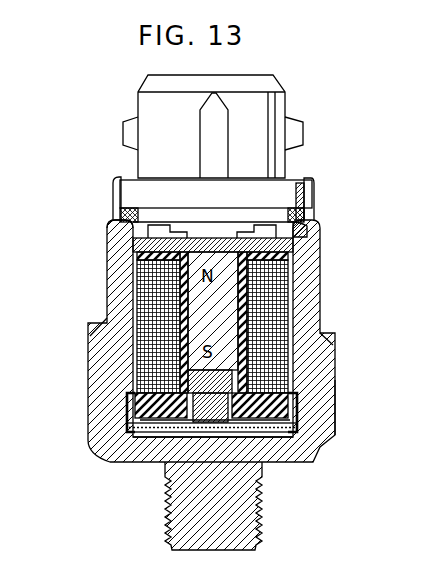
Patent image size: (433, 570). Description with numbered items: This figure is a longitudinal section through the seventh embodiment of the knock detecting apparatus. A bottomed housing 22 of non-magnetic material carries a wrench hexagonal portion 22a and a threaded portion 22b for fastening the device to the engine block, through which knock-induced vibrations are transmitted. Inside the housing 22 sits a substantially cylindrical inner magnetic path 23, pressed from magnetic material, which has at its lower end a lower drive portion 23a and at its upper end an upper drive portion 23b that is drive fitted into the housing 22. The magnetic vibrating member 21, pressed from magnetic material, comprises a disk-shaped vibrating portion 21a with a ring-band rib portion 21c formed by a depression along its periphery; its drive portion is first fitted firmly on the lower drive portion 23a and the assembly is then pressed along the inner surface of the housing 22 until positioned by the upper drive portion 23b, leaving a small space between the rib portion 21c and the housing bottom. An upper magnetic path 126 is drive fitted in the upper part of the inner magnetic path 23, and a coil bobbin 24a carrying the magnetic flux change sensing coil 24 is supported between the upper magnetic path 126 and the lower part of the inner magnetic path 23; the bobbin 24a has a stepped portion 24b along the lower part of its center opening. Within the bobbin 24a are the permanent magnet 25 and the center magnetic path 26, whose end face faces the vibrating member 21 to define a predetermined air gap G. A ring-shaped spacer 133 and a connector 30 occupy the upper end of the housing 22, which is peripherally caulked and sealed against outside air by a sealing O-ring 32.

The connector 30 is at (283, 104).
The sealing O-ring 32 is at (120, 212).
The ring-shaped spacer 133 is at (112, 228).
The upper drive portion 23b is at (310, 226).
The upper magnetic path 126 is at (290, 252).
The permanent magnet 25 is at (178, 286).
The housing 22 is at (312, 300).
The inner magnetic path 23 is at (295, 341).
The center magnetic path 26 is at (215, 378).
The wrench hexagonal portion 22a is at (327, 392).
The magnetic flux change sensing coil 24 is at (295, 405).
The stepped portion 24b is at (128, 400).
The lower drive portion 23a is at (120, 431).
The coil bobbin 24a is at (333, 436).
The magnetic vibrating member 21 is at (255, 432).
The rib portion 21c is at (145, 420).
The vibrating portion 21a is at (195, 415).
The air gap G is at (165, 468).
The threaded portion 22b is at (250, 521).